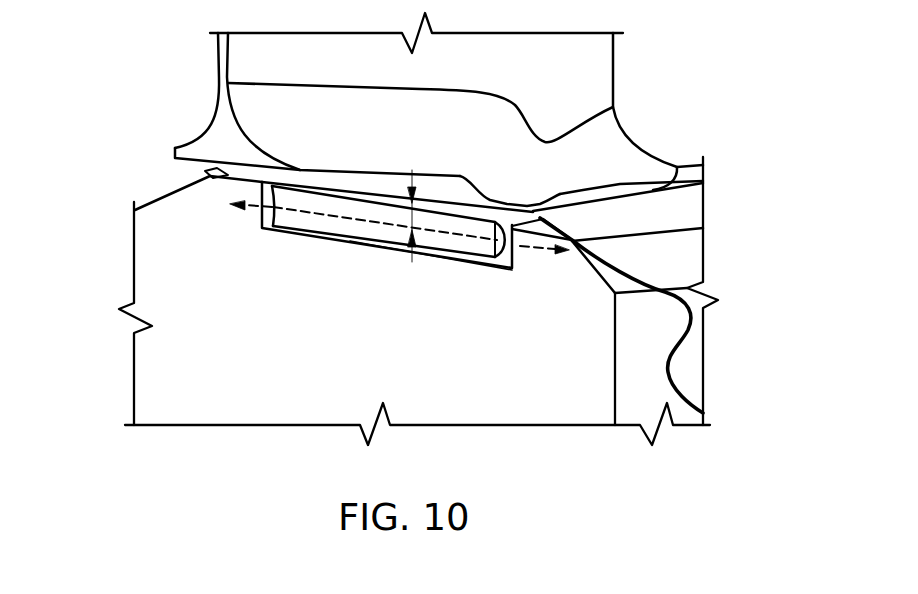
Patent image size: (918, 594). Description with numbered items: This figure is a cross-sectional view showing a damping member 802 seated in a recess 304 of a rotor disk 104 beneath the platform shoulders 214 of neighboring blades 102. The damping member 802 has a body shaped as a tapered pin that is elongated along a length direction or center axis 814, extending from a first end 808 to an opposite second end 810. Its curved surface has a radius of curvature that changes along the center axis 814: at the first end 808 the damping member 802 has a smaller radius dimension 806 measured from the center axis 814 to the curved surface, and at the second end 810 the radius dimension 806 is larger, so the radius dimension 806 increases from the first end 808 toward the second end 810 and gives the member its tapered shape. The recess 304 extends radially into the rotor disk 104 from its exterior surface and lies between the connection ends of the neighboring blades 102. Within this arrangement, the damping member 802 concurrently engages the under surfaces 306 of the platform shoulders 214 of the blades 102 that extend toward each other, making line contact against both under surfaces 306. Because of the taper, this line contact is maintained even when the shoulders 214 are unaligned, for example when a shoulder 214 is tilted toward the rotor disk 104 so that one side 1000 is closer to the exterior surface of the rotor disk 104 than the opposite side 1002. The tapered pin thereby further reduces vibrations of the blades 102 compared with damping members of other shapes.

The blade 102 is at (597, 82).
The opposite side of shoulder 1002 is at (173, 148).
The side of shoulder 1000 is at (662, 215).
The rotor disk 104 is at (573, 335).
The platform shoulder 214 is at (447, 203).
The first end 808 is at (510, 208).
The recess 304 is at (508, 310).
The second end 810 is at (273, 207).
The damping member 802 is at (372, 232).
The radius dimension 806 is at (410, 212).
The under surface 306 is at (226, 188).
The center axis 814 is at (527, 258).